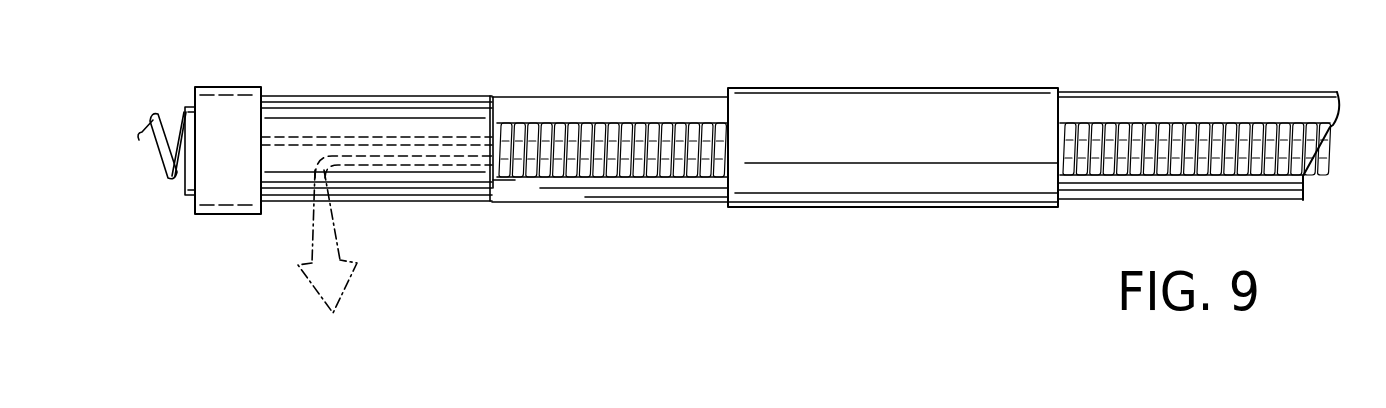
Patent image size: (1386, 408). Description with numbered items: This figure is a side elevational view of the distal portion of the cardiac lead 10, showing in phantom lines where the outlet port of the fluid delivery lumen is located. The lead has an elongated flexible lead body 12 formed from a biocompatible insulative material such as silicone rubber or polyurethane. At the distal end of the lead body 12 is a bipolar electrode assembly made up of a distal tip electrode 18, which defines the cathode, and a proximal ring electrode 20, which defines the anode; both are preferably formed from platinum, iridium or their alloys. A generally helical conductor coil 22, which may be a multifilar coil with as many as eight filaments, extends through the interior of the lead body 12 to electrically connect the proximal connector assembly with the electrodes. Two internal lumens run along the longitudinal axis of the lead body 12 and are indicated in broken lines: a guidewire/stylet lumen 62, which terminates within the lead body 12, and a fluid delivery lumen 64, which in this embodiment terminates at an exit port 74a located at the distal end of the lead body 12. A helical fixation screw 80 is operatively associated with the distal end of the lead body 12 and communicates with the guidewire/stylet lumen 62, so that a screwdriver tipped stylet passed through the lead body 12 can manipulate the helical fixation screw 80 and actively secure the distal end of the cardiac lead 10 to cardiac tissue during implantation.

The cardiac lead 10 is at (851, 51).
The lead body 12 is at (1248, 105).
The distal tip electrode 18 is at (247, 94).
The proximal ring electrode 20 is at (857, 180).
The conductor coil 22 is at (1140, 125).
The guidewire/stylet lumen 62 is at (432, 140).
The fluid delivery lumen 64 is at (473, 160).
The exit port 74a is at (323, 207).
The helical fixation screw 80 is at (145, 122).